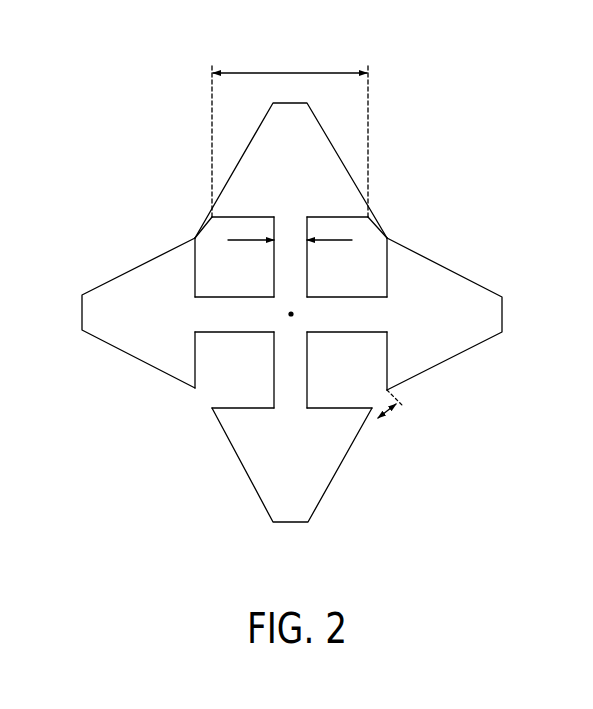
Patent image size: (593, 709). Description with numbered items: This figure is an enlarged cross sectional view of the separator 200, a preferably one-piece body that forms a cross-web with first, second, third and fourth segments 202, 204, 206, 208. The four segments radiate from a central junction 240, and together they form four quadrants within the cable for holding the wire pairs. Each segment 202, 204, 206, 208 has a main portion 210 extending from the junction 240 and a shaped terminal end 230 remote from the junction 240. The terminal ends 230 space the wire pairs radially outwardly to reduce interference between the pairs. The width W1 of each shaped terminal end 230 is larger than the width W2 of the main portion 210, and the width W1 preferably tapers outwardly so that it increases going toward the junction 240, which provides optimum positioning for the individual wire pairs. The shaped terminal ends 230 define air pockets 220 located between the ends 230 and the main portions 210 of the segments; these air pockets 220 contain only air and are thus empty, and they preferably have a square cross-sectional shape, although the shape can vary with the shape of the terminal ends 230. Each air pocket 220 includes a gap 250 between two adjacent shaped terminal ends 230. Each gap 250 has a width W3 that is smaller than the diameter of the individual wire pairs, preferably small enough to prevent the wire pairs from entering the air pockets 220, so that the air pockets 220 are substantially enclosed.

The separator 200 is at (296, 310).
The first segment 202 is at (220, 313).
The second segment 204 is at (283, 229).
The third segment 206 is at (375, 322).
The fourth segment 208 is at (294, 411).
The main portion 210 is at (203, 297).
The air pocket 220 is at (249, 276).
The shaped terminal end 230 is at (318, 165).
The junction 240 is at (298, 314).
The gap 250 is at (195, 238).
The width of shaped terminal end W1 is at (292, 73).
The width of main portion W2 is at (340, 240).
The width of gap W3 is at (393, 416).